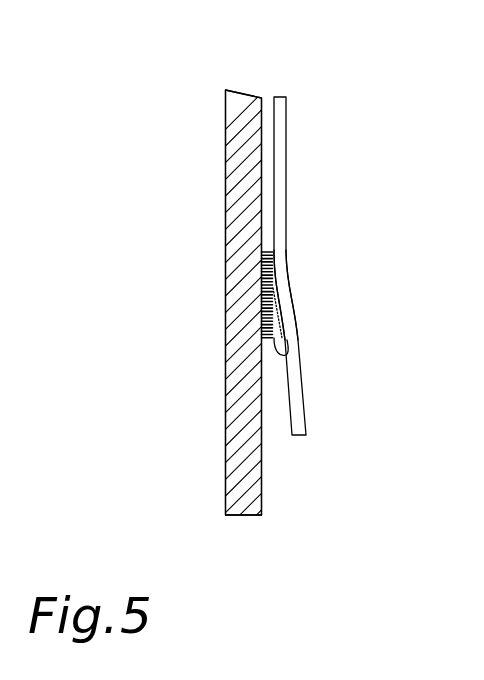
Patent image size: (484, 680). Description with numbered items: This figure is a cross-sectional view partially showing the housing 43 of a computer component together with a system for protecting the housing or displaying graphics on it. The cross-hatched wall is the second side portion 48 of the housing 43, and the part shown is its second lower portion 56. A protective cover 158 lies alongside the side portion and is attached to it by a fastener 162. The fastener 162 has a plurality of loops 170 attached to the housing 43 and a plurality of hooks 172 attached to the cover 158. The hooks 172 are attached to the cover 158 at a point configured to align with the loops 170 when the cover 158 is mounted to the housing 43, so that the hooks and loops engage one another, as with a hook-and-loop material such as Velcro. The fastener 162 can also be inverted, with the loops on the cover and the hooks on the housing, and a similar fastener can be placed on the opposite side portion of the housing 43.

The housing 43 is at (244, 82).
The second side portion 48 is at (226, 137).
The second lower portion 56 is at (232, 178).
The protective cover 158 is at (286, 122).
The fastener 162 is at (300, 299).
The loops 170 is at (262, 343).
The hooks 172 is at (287, 352).